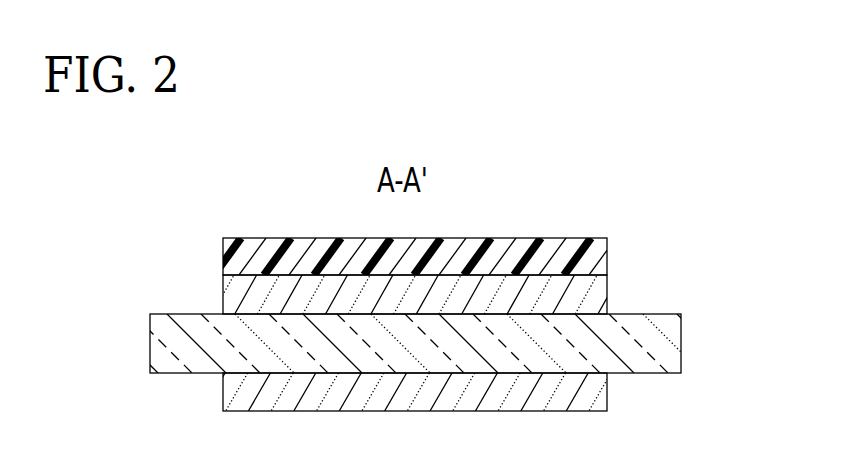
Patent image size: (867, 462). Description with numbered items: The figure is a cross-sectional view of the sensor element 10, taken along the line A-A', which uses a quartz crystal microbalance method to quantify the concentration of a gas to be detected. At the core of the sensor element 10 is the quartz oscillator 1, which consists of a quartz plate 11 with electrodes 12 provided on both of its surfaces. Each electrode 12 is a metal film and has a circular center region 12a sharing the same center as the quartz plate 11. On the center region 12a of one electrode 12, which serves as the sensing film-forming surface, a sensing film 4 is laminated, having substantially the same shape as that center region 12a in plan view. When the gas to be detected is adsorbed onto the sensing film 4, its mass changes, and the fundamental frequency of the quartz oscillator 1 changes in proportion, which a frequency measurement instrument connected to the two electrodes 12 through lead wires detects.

The quartz oscillator 1 is at (82, 272).
The sensing film 4 is at (508, 250).
The sensor element 10 is at (640, 164).
The quartz plate 11 is at (165, 341).
The electrode 12 is at (351, 344).
The center region 12a is at (257, 295).